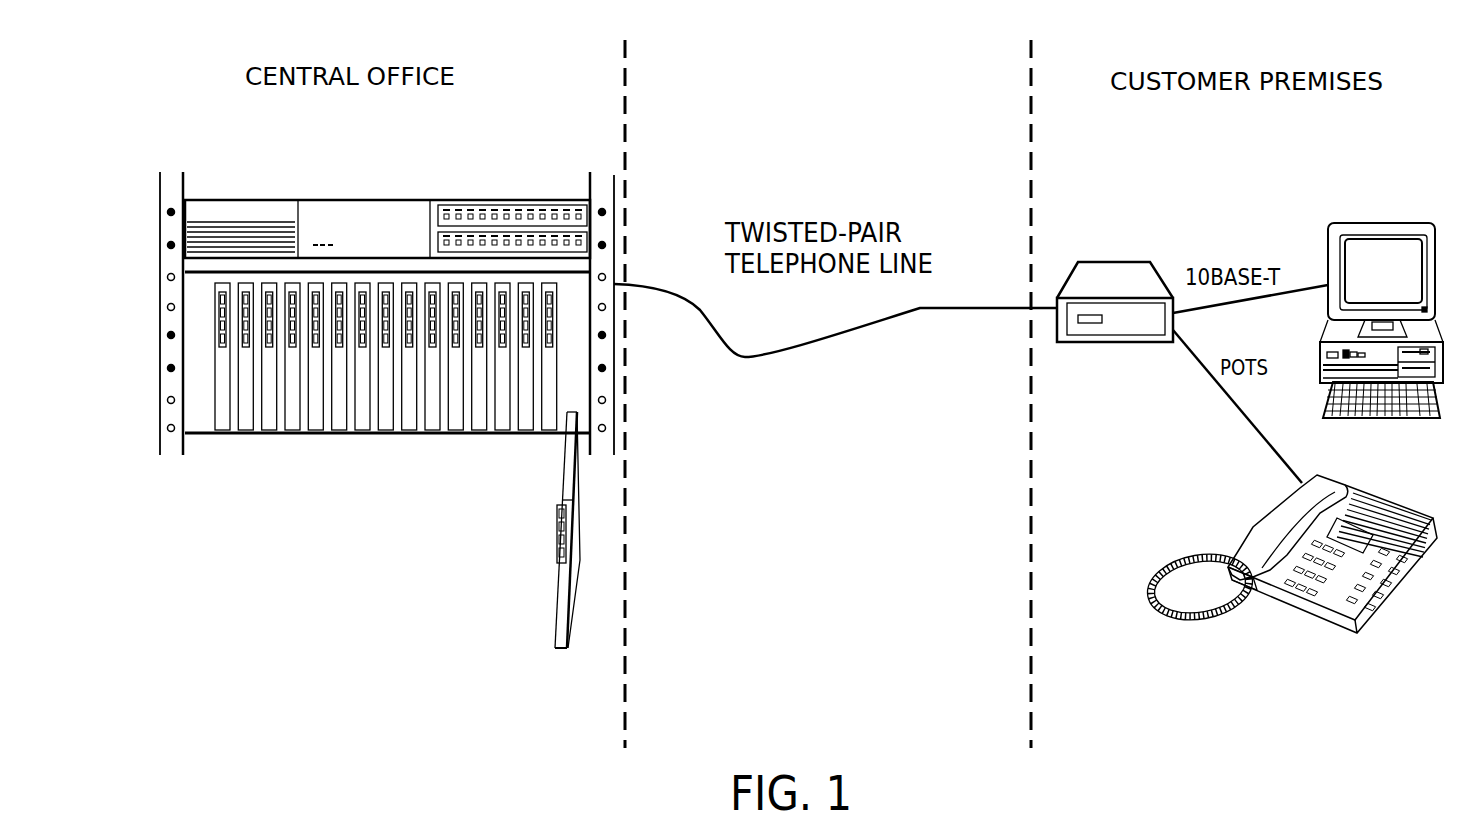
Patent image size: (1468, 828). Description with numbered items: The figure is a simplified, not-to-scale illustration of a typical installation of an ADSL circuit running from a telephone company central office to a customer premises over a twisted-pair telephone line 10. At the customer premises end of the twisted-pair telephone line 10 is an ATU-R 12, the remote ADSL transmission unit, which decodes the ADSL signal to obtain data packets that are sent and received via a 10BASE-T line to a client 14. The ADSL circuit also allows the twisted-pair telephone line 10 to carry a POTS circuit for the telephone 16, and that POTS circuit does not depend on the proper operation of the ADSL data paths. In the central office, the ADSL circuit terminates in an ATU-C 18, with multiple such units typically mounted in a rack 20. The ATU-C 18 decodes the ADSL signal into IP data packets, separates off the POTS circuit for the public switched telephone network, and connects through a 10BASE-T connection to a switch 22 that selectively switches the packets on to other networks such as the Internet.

The twisted-pair telephone line 10 is at (765, 358).
The ATU-R 12 is at (1090, 342).
The client 14 is at (1370, 223).
The telephone 16 is at (1290, 607).
The ATU-C 18 is at (558, 650).
The rack 20 is at (347, 433).
The switch 22 is at (473, 200).